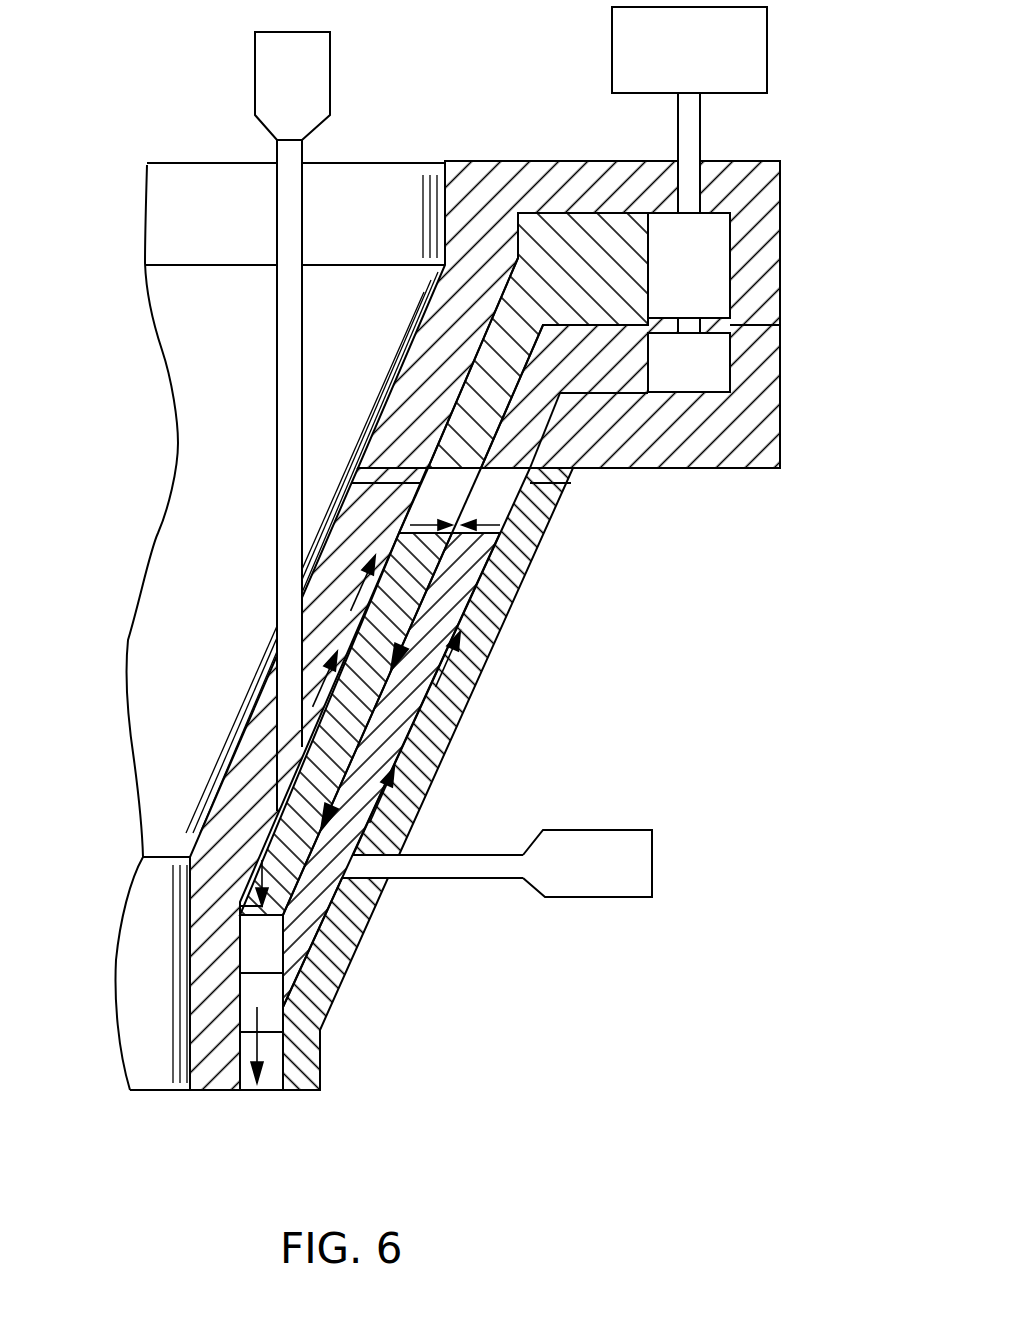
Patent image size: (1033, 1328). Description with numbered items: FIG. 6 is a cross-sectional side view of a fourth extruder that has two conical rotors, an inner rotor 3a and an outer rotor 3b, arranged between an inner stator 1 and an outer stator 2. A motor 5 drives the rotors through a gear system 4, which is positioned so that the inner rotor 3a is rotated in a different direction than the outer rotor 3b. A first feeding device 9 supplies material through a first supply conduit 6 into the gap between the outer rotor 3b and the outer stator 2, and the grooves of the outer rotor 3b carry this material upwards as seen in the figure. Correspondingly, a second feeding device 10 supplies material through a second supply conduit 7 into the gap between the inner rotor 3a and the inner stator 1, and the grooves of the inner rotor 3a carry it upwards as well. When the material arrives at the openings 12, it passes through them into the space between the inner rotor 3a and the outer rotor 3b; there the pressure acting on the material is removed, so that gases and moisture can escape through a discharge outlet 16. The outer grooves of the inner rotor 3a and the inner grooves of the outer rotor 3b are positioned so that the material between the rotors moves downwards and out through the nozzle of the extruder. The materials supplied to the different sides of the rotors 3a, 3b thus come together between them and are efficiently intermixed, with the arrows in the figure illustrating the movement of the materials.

The inner stator 1 is at (253, 810).
The outer stator 2 is at (440, 717).
The inner rotor 3a is at (337, 717).
The outer rotor 3b is at (390, 737).
The gear system 4 is at (677, 253).
The motor 5 is at (697, 43).
The first supply conduit 6 is at (450, 863).
The second supply conduit 7 is at (280, 435).
The first feeding device 9 is at (553, 868).
The second feeding device 10 is at (287, 102).
The openings 12 is at (448, 482).
The discharge outlet 16 is at (383, 477).